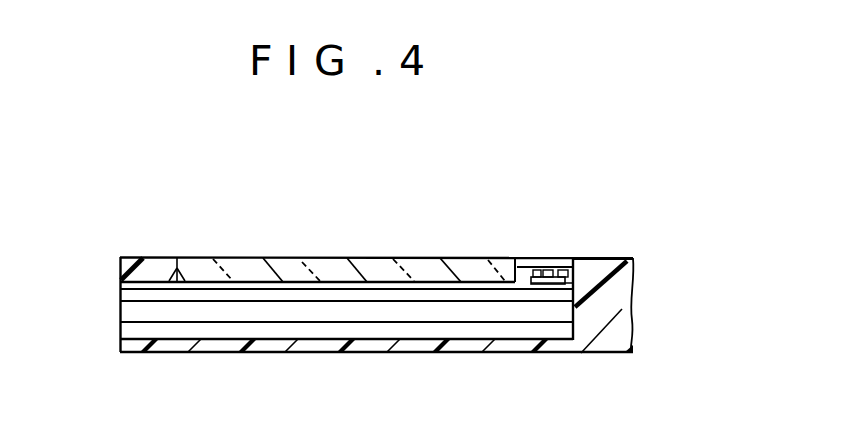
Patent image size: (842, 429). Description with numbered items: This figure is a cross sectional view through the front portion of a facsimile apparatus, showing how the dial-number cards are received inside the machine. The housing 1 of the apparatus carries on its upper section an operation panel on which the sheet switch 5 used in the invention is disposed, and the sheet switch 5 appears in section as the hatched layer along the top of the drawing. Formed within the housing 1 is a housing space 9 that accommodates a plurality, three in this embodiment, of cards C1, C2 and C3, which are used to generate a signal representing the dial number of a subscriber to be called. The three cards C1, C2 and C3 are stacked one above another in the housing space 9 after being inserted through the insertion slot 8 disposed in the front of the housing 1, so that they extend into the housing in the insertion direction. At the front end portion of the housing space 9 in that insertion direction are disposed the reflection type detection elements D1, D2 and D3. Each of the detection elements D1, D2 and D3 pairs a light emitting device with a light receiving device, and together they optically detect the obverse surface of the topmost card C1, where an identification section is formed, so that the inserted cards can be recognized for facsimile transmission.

The housing 1 is at (620, 279).
The sheet switch 5 is at (299, 262).
The insertion slot 8 is at (120, 350).
The housing space 9 is at (575, 317).
The card C1 is at (120, 290).
The card C2 is at (120, 312).
The card C3 is at (120, 327).
The reflection type detection element D1 is at (549, 268).
The reflection type detection element D2 is at (548, 273).
The reflection type detection element D3 is at (563, 273).